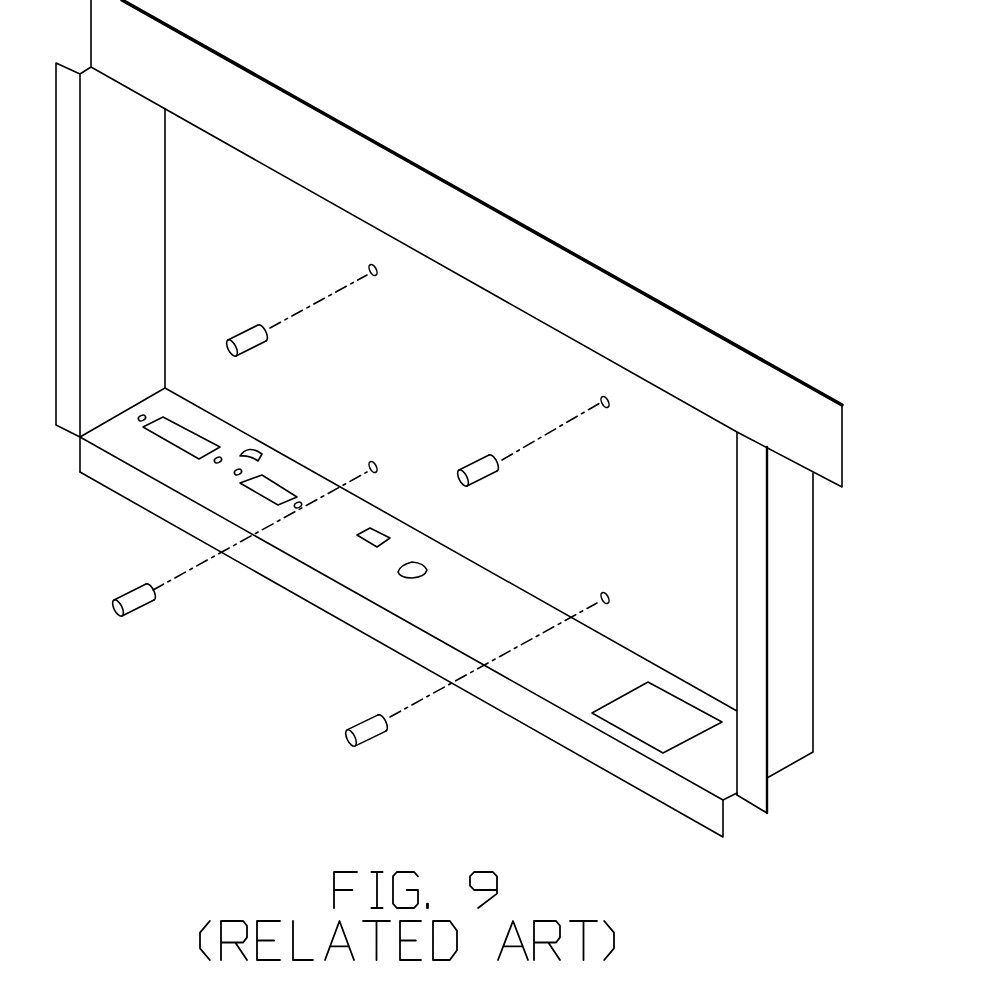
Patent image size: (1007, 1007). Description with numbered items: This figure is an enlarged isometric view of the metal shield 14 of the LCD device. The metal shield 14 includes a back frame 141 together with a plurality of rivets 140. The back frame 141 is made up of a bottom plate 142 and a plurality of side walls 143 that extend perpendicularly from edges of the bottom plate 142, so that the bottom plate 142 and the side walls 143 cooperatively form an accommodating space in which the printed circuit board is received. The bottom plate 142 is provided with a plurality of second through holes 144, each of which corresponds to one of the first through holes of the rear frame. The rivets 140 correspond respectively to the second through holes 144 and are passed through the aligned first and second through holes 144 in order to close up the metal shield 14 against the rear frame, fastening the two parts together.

The metal shield 14 is at (559, 171).
The rivets 140 is at (490, 457).
The back frame 141 is at (749, 835).
The bottom plate 142 is at (527, 347).
The side walls 143 is at (578, 683).
The second through holes 144 is at (607, 398).